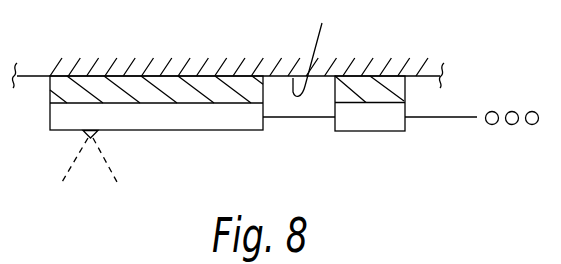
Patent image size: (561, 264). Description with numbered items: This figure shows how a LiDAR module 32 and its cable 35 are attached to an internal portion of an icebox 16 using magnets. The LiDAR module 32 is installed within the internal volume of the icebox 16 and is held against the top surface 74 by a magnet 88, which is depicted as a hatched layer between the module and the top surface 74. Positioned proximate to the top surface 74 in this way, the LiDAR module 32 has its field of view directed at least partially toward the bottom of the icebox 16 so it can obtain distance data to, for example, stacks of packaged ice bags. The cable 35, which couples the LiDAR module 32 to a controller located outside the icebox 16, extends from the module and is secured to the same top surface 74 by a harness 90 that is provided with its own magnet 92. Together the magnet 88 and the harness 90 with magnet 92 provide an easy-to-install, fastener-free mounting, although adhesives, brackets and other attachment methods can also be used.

The icebox 16 is at (27, 93).
The LiDAR module 32 is at (167, 115).
The cable 35 is at (285, 121).
The top surface 74 is at (316, 49).
The magnet 88 is at (140, 78).
The harness 90 is at (363, 115).
The magnet 92 is at (365, 77).